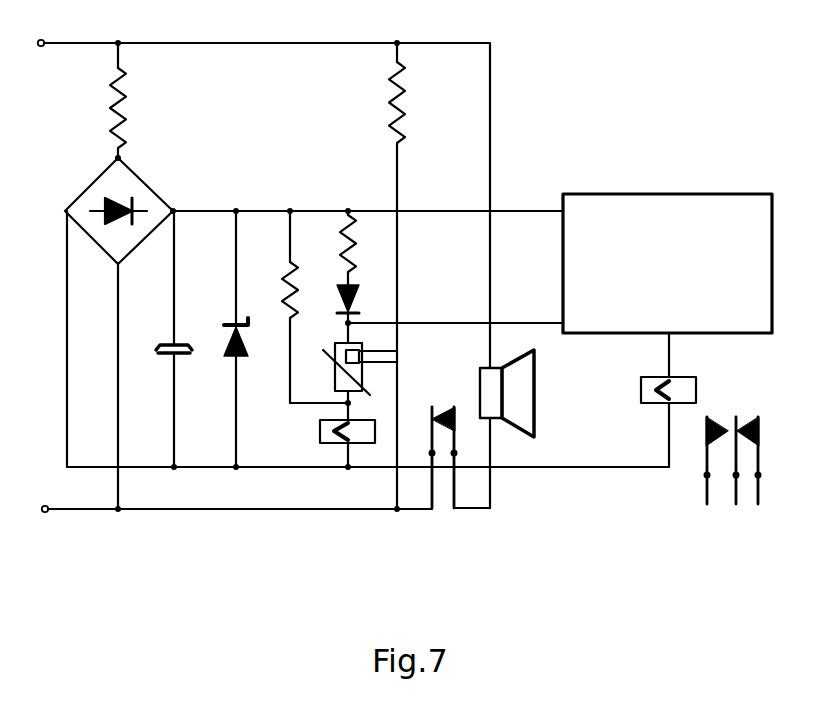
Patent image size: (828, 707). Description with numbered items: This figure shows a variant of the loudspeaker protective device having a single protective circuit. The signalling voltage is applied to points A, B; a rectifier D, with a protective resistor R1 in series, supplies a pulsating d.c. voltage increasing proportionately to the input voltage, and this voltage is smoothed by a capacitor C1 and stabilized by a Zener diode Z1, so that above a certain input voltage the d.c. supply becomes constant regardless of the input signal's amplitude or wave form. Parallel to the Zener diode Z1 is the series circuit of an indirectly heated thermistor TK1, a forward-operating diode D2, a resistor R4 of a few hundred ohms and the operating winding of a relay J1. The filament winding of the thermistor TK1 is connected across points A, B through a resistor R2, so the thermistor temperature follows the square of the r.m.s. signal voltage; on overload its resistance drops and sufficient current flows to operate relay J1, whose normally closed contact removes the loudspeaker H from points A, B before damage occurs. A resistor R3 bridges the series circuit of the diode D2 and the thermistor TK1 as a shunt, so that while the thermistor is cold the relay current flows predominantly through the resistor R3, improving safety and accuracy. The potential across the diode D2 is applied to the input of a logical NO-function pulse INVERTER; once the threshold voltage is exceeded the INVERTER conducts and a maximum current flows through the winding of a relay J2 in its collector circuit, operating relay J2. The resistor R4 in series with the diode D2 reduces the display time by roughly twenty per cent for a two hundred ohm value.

The input point A is at (30, 44).
The input point B is at (34, 511).
The resistor R1 is at (105, 100).
The resistor R2 is at (409, 276).
The resistor R3 is at (277, 264).
The resistor R4 is at (359, 248).
The rectifier D is at (119, 211).
The diode D2 is at (362, 304).
The capacitor C1 is at (161, 339).
The Zener diode Z1 is at (227, 339).
The indirectly heated thermistor TK1 is at (346, 371).
The relay J1 is at (335, 443).
The relay J2 is at (656, 400).
The loudspeaker H is at (517, 393).
The logical NO-function pulse inverter INVERTER is at (667, 263).